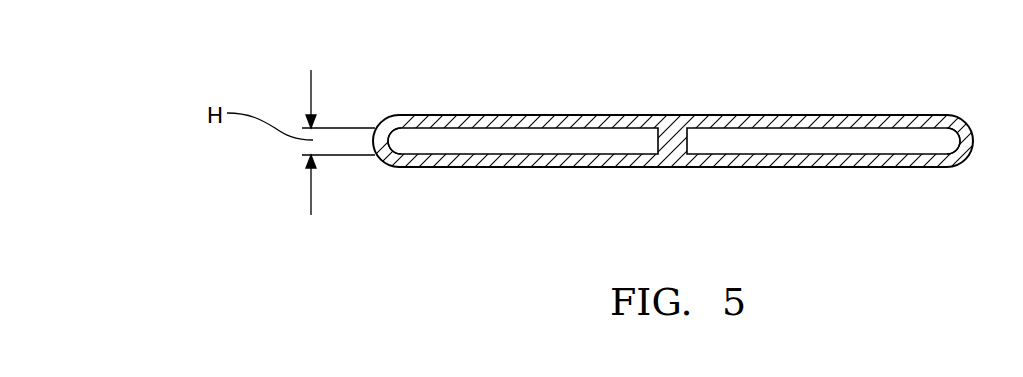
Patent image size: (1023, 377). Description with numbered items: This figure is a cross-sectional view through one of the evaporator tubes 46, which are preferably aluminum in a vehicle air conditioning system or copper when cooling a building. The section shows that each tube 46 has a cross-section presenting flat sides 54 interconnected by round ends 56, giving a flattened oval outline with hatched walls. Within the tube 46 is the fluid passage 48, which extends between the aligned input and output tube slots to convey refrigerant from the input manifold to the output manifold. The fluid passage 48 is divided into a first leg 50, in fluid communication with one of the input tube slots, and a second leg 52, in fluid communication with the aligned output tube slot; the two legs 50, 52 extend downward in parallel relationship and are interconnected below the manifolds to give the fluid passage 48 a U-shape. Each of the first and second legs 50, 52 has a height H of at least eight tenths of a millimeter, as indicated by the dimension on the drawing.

The tube 46 is at (682, 141).
The fluid passage 48 is at (630, 162).
The first leg 50 is at (935, 137).
The second leg 52 is at (410, 147).
The flat sides 54 is at (653, 113).
The round ends 56 is at (387, 120).